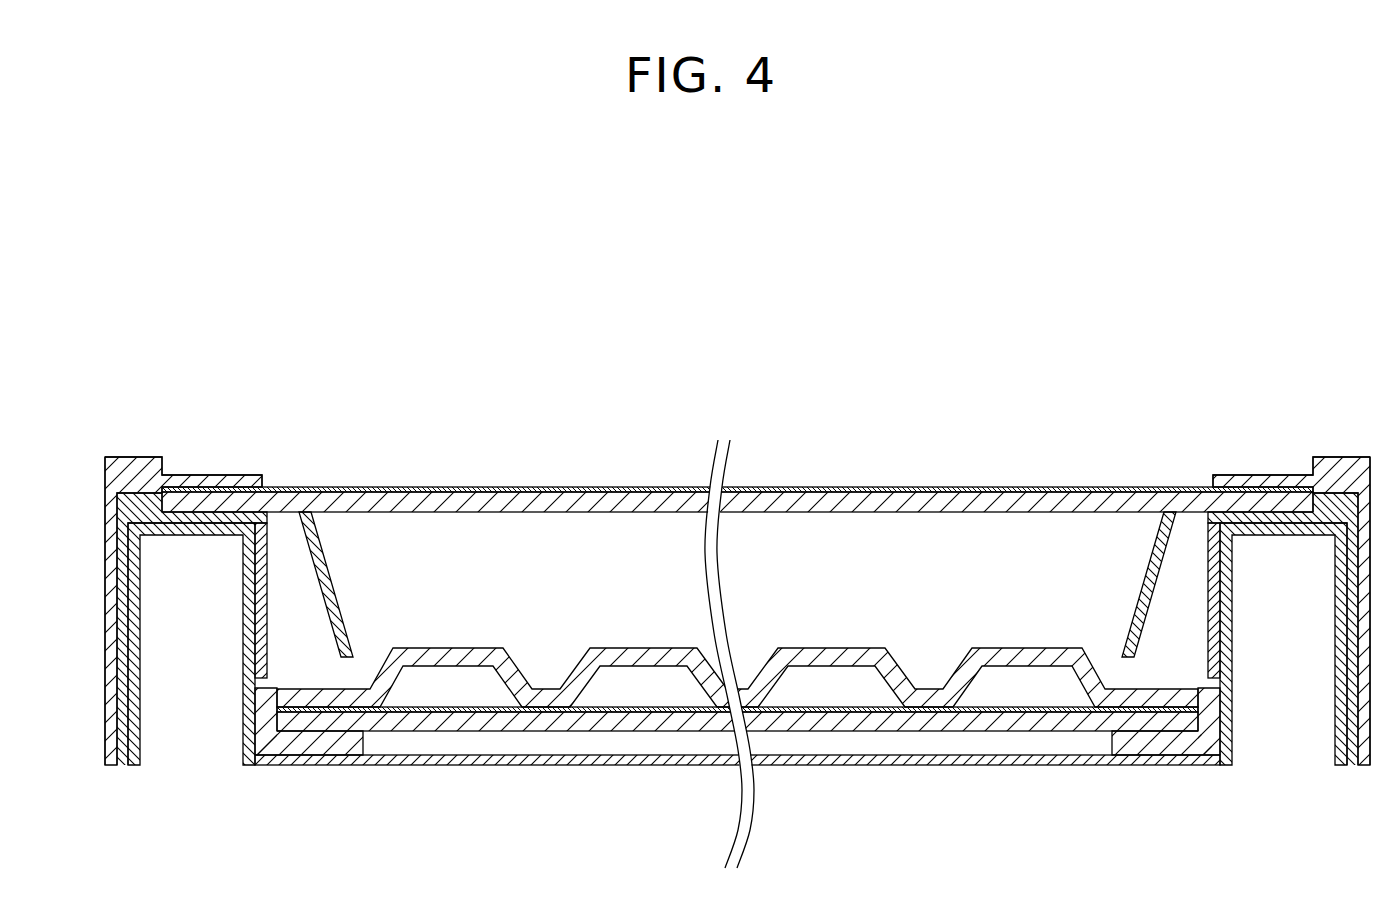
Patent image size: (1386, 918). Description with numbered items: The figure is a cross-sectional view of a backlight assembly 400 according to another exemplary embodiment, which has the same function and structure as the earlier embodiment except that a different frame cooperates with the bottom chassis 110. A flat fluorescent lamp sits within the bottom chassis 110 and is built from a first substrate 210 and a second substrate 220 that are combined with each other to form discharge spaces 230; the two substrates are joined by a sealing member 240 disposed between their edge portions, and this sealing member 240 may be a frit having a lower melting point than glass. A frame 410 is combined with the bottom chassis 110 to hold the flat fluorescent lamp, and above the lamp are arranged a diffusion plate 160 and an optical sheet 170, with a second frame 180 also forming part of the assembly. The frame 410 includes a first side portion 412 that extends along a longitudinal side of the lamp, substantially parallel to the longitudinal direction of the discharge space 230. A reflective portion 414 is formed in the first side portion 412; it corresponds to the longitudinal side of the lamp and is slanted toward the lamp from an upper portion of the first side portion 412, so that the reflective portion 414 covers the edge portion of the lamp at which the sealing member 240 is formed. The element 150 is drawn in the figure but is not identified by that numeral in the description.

The backlight assembly 400 is at (880, 450).
The bottom chassis 110 is at (590, 768).
The bottom chassis 150 is at (272, 750).
The diffusion plate 160 is at (548, 500).
The optical sheet 170 is at (470, 487).
The second frame 180 is at (127, 472).
The first substrate 210 is at (675, 723).
The second substrate 220 is at (595, 662).
The discharge space 230 is at (468, 696).
The sealing member 240 is at (332, 748).
The frame 410 is at (118, 512).
The first side portion 412 is at (266, 500).
The reflective portion 414 is at (328, 591).